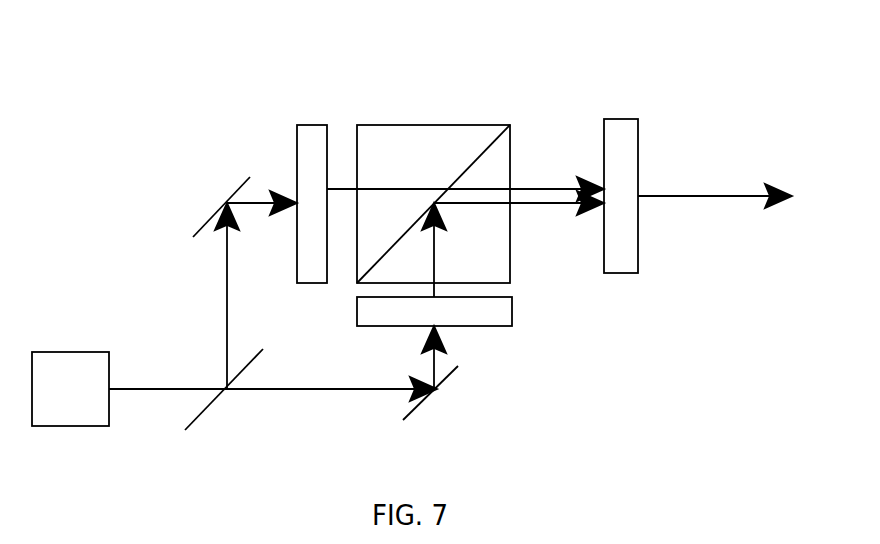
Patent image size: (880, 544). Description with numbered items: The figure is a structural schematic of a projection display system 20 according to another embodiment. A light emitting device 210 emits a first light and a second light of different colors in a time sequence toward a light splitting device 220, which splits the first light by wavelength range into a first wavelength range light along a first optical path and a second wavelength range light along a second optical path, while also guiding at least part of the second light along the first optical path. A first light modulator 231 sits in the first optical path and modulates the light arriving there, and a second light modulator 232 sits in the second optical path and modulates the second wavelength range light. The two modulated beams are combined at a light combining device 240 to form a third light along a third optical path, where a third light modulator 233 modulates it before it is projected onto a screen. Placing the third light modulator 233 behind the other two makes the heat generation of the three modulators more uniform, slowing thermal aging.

The projection display system 20 is at (118, 176).
The light emitting device 210 is at (73, 373).
The light splitting device 220 is at (203, 410).
The first light modulator 231 is at (296, 142).
The second light modulator 232 is at (512, 325).
The third light modulator 233 is at (636, 150).
The light combining device 240 is at (388, 142).